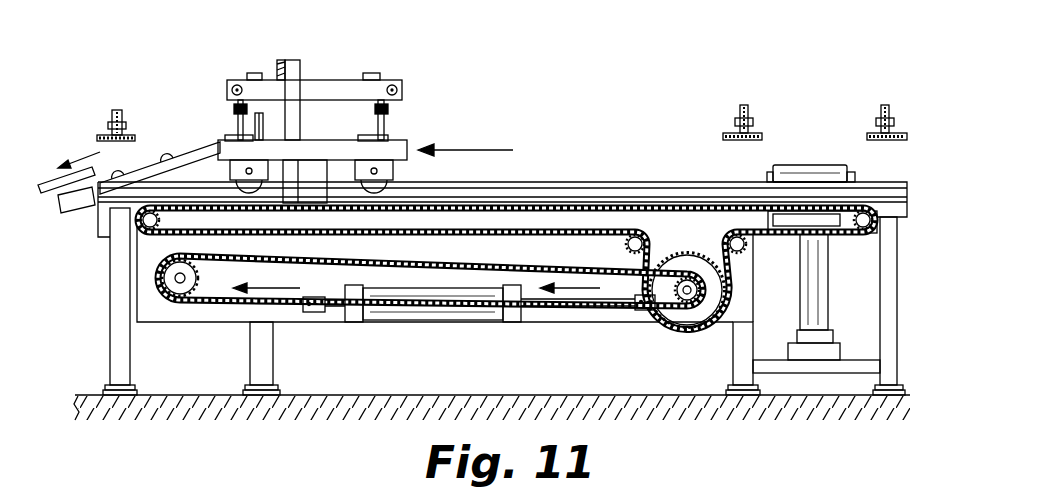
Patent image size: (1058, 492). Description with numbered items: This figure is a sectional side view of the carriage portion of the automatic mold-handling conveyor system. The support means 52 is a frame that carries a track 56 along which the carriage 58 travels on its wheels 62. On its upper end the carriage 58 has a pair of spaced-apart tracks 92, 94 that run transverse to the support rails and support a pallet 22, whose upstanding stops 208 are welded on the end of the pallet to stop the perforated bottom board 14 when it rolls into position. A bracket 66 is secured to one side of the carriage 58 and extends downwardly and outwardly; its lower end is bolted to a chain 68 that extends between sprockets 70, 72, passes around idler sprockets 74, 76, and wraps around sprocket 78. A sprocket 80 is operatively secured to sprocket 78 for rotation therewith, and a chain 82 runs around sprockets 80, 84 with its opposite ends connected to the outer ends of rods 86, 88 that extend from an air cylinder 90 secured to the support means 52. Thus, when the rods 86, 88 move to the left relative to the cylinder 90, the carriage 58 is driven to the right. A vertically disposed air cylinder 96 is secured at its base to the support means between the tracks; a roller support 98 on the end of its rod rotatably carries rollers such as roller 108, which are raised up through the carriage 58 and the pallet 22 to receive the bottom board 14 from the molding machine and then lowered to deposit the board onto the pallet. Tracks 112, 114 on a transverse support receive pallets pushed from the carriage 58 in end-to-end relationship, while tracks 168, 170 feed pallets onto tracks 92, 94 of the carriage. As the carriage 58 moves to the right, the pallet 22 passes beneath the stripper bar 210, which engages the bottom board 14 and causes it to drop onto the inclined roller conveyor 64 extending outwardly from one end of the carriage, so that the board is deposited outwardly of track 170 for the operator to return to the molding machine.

The bottom board 14 is at (47, 172).
The pallet 22 is at (334, 72).
The support means 52 is at (905, 321).
The track 56 is at (677, 186).
The carriage 58 is at (425, 135).
The wheels 62 is at (382, 182).
The inclined roller conveyor 64 is at (182, 157).
The bracket 66 is at (297, 192).
The chain 68 is at (538, 206).
The sprocket 70 is at (141, 231).
The sprocket 72 is at (862, 235).
The idler sprocket 74 is at (624, 236).
The idler sprocket 76 is at (750, 248).
The sprocket 78 is at (692, 318).
The sprocket 80 is at (668, 312).
The chain 82 is at (548, 264).
The sprocket 84 is at (162, 277).
The rod 86 is at (319, 313).
The rod 88 is at (643, 311).
The air cylinder 90 is at (420, 303).
The track 92 is at (390, 120).
The track 94 is at (237, 118).
The air cylinder 96 is at (802, 300).
The roller support 98 is at (768, 173).
The roller 108 is at (815, 165).
The track 112 is at (882, 106).
The track 114 is at (745, 106).
The track 168 is at (264, 118).
The track 170 is at (118, 110).
The upstanding stops 208 is at (256, 72).
The stripper bar 210 is at (281, 60).